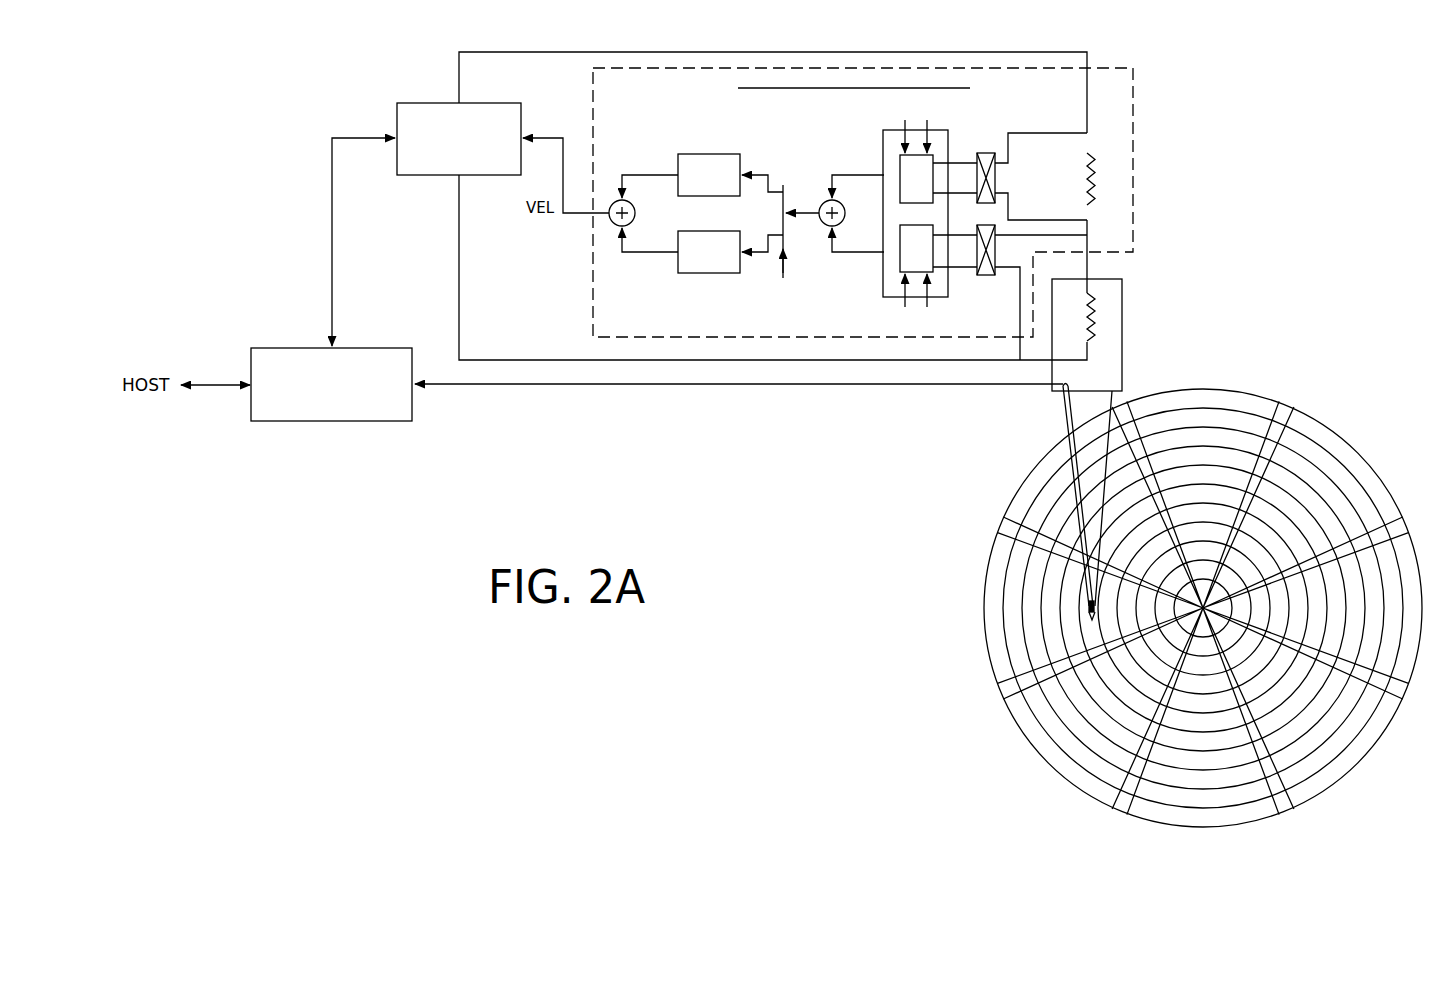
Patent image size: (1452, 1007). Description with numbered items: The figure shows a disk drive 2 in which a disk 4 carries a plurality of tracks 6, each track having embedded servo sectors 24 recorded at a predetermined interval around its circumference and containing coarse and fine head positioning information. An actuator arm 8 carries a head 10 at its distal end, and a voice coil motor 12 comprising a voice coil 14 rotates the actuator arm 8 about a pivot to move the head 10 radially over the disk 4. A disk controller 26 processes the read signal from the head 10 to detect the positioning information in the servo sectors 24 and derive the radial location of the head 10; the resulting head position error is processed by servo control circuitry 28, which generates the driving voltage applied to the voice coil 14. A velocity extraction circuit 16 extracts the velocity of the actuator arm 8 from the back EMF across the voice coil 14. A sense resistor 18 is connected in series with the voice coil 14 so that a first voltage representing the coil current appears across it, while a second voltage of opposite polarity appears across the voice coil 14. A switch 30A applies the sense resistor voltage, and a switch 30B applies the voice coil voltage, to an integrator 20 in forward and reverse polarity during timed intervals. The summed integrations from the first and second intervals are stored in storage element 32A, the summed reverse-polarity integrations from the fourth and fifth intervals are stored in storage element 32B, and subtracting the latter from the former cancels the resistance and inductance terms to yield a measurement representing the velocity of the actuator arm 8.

The disk drive 2 is at (216, 209).
The disk 4 is at (1331, 423).
The tracks 6 is at (1204, 412).
The actuator arm 8 is at (1063, 419).
The head 10 is at (1084, 630).
The voice coil motor 12 is at (1122, 316).
The voice coil 14 is at (1105, 298).
The velocity extraction circuit 16 is at (593, 96).
The sense resistor 18 is at (1104, 154).
The integrator 20 is at (883, 281).
The embedded servo sectors 24 is at (1128, 410).
The disk controller 26 is at (334, 422).
The servo control circuitry 28 is at (413, 176).
The switch 30A is at (985, 153).
The switch 30B is at (986, 277).
The storage element 32A is at (704, 153).
The storage element 32B is at (706, 274).